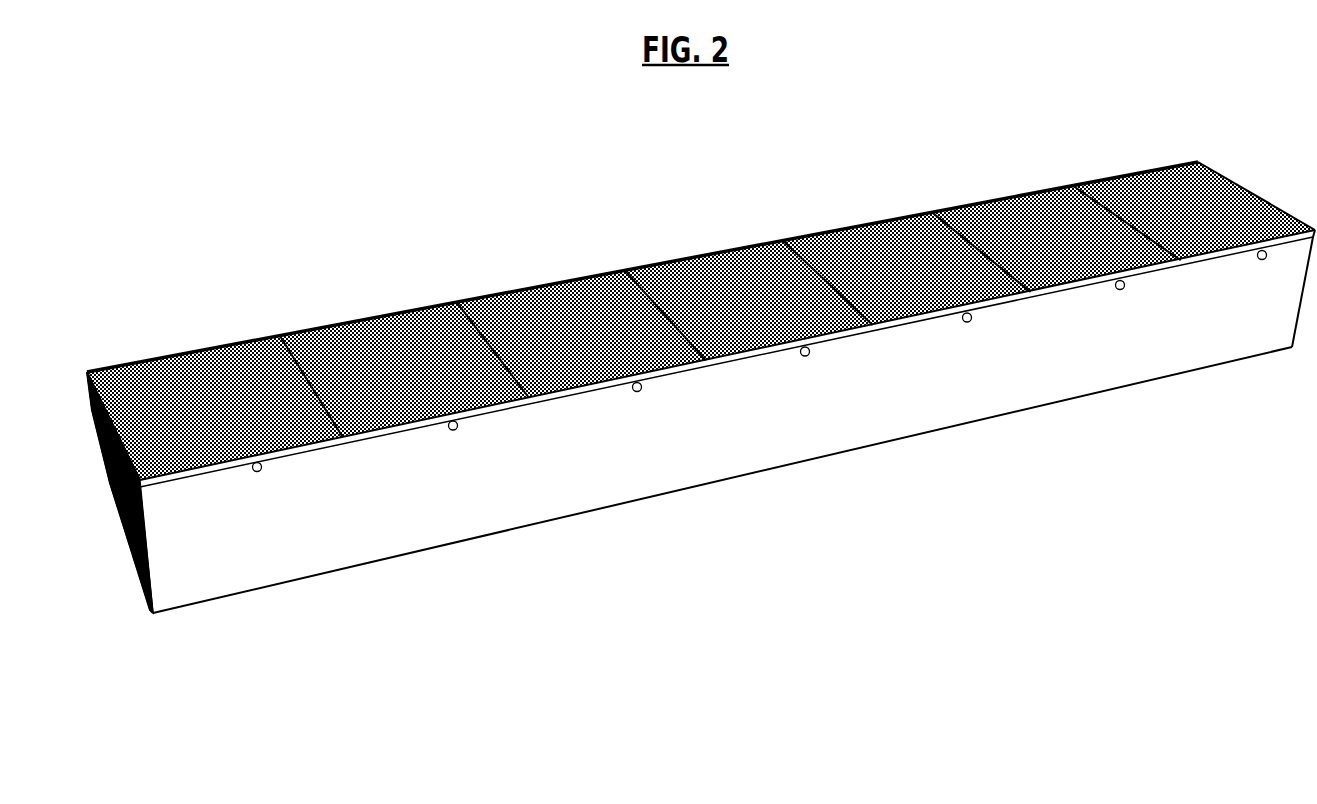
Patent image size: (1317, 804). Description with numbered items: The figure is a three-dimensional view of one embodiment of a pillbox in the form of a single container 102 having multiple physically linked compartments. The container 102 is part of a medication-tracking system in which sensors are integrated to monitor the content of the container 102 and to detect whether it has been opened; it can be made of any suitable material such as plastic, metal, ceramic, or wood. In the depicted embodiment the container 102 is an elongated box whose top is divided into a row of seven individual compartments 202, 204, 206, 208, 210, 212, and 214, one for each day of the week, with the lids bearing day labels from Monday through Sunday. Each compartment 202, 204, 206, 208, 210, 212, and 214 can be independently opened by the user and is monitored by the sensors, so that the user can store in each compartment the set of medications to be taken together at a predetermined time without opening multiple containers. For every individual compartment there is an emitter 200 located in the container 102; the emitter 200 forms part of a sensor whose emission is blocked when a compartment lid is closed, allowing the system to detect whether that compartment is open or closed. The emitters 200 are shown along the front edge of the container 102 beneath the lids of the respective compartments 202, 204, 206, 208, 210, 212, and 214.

The container 102 is at (325, 135).
The emitter 200 is at (259, 471).
The compartment 202 is at (200, 365).
The compartment 204 is at (377, 340).
The compartment 206 is at (555, 303).
The compartment 208 is at (713, 270).
The compartment 210 is at (872, 233).
The compartment 212 is at (1010, 210).
The compartment 214 is at (1152, 178).